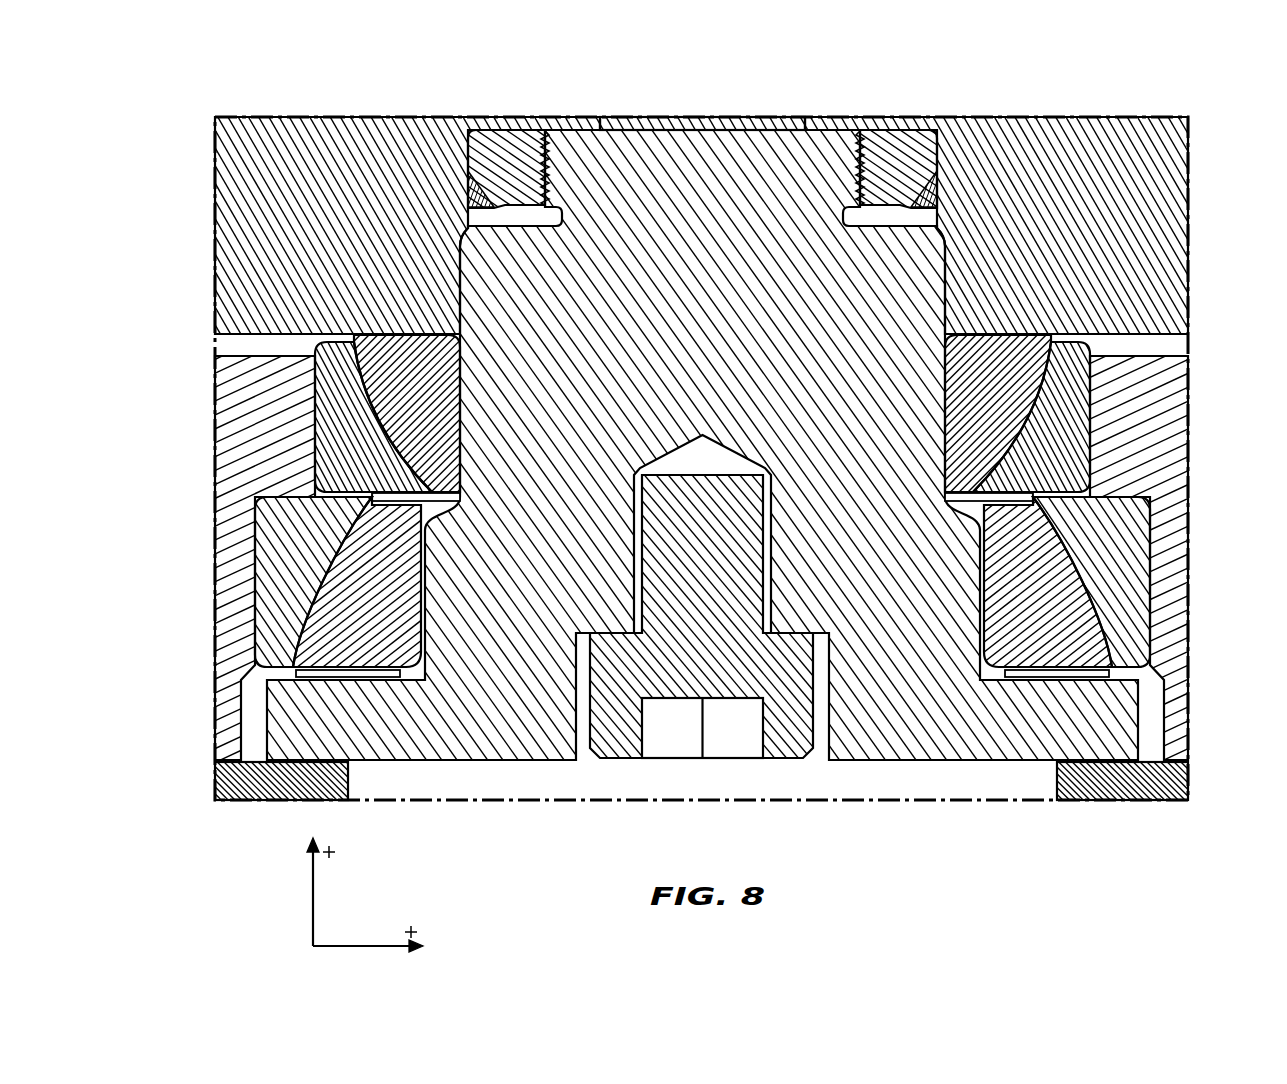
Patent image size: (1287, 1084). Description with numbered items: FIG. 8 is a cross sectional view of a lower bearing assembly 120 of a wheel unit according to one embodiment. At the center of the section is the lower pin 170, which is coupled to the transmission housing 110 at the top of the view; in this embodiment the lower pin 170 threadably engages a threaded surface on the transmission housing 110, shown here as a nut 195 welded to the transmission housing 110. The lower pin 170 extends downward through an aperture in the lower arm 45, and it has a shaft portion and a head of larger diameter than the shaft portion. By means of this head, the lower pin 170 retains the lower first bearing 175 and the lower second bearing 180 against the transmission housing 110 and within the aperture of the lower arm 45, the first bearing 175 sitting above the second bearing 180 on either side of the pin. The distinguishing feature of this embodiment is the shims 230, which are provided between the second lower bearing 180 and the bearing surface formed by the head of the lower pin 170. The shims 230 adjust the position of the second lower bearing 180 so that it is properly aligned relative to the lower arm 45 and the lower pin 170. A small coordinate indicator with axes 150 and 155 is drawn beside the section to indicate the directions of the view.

The lower arm 45 is at (235, 633).
The transmission housing 110 is at (972, 157).
The lower bearing assembly 120 is at (1018, 830).
The x axis 150 is at (366, 946).
The y axis 155 is at (313, 885).
The lower pin 170 is at (850, 605).
The lower first bearing 175 is at (355, 428).
The lower second bearing 180 is at (362, 595).
The nut 195 is at (511, 160).
The shims 230 is at (345, 676).